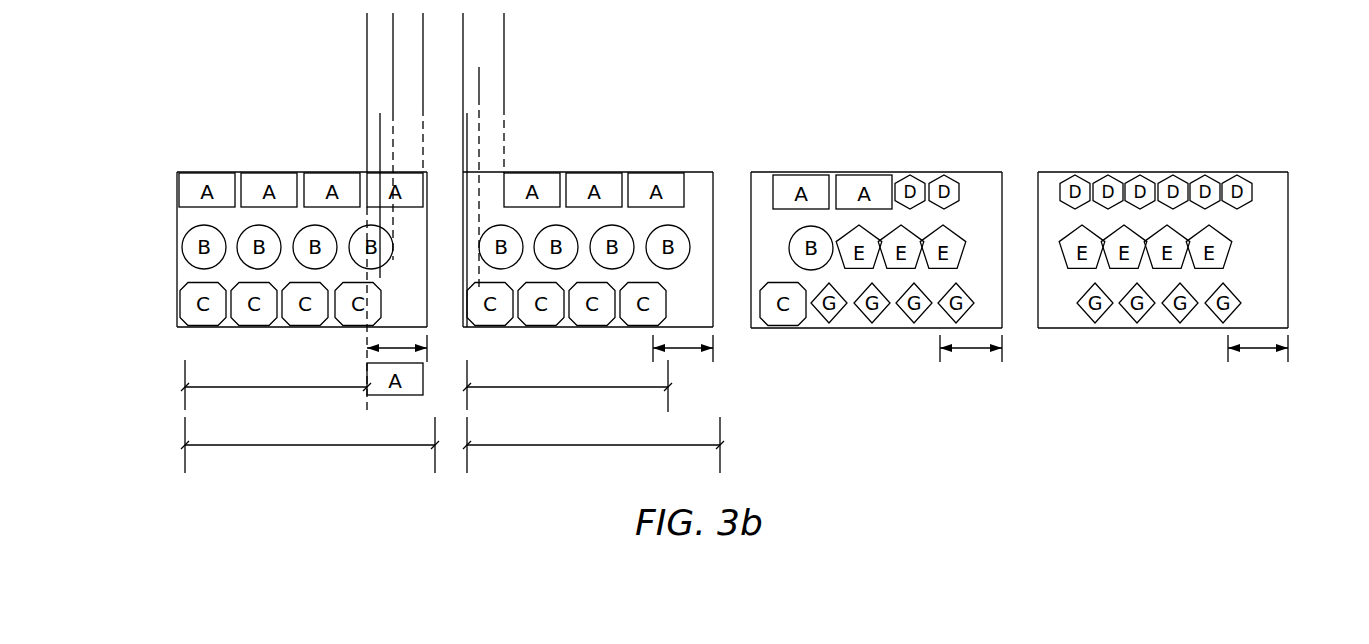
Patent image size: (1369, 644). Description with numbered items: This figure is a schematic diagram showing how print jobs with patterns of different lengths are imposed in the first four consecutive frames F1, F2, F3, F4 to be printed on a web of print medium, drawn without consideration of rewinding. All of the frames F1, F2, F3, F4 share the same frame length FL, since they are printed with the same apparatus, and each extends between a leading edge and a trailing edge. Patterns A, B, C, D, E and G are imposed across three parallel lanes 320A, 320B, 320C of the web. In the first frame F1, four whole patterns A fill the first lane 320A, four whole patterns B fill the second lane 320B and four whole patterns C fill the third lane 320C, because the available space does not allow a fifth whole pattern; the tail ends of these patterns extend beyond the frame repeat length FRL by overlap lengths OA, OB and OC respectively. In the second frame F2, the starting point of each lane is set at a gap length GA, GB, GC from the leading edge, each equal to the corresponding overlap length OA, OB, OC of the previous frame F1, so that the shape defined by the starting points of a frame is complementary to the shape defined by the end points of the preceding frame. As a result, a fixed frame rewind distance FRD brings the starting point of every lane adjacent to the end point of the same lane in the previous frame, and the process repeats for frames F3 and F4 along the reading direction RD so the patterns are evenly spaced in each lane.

The first frame F1 is at (299, 239).
The second frame F2 is at (633, 288).
The third frame F3 is at (884, 261).
The fourth frame F4 is at (1174, 255).
The first lane 320A is at (130, 130).
The second lane 320B is at (75, 182).
The third lane 320C is at (120, 245).
The overlap length of lane 320A OA is at (475, 38).
The overlap length of lane 320B OB is at (445, 82).
The overlap length of lane 320C OC is at (435, 143).
The gap length of lane 320A GA is at (410, 50).
The gap length of lane 320B GB is at (410, 96).
The gap length of lane 320C GC is at (410, 132).
The frame rewind distance FRD is at (390, 350).
The frame repeat length FRL is at (426, 384).
The frame length FL is at (452, 442).
The reading direction RD is at (442, 515).